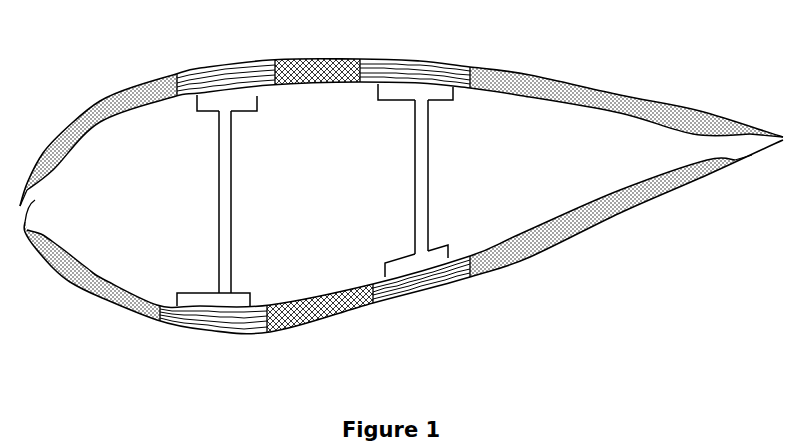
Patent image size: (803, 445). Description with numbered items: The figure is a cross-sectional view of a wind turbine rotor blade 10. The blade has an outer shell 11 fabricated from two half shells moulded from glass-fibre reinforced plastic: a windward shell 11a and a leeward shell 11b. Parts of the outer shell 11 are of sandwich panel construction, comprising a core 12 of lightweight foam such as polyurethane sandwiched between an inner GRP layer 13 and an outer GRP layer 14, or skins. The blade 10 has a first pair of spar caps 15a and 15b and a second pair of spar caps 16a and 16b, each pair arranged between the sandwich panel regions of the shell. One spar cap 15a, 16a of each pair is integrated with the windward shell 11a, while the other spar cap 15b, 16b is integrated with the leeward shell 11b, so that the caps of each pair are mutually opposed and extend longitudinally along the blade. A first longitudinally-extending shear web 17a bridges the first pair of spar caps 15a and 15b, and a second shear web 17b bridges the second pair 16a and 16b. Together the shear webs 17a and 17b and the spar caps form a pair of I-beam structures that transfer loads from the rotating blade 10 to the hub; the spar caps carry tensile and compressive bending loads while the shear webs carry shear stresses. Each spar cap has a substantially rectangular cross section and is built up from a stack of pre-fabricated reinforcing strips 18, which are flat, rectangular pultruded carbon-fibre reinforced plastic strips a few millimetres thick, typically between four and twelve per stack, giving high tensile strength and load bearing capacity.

The wind turbine rotor blade 10 is at (78, 72).
The outer shell 11 is at (700, 113).
The windward shell 11a is at (657, 200).
The leeward shell 11b is at (613, 88).
The core 12 is at (83, 283).
The inner GRP layer 13 is at (560, 216).
The outer GRP layer 14 is at (570, 238).
The spar cap 15a is at (212, 336).
The spar cap 15b is at (227, 68).
The spar cap 16a is at (433, 294).
The spar cap 16b is at (420, 60).
The first shear web 17a is at (220, 200).
The second shear web 17b is at (428, 178).
The reinforcing strips 18 is at (375, 80).